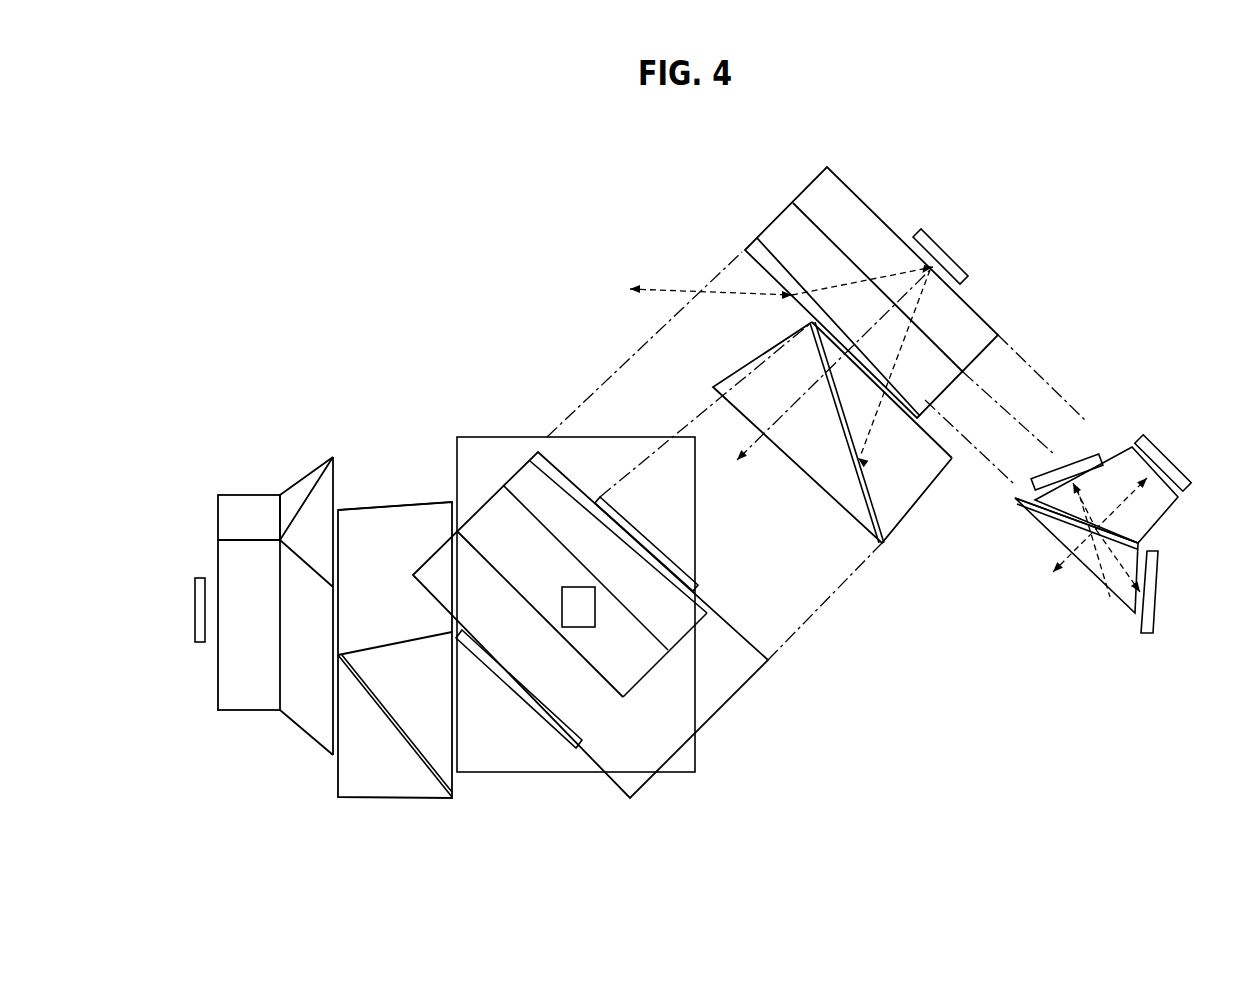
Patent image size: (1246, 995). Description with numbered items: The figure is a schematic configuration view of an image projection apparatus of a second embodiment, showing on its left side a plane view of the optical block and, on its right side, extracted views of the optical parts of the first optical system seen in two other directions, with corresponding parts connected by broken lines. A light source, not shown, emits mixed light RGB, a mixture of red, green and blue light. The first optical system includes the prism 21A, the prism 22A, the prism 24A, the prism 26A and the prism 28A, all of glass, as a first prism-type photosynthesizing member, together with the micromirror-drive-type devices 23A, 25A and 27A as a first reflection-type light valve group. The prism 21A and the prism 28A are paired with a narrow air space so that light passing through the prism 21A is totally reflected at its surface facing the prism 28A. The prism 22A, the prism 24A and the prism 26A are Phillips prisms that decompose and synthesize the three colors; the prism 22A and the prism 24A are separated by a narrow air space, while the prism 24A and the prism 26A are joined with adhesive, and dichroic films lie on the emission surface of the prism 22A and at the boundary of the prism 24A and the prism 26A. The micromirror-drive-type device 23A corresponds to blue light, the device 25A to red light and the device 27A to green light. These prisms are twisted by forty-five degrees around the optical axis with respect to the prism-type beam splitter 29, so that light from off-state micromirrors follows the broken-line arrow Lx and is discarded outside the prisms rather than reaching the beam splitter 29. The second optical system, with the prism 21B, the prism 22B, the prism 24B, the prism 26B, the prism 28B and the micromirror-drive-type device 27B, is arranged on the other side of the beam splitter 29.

The prism 21A is at (880, 548).
The prism 22A is at (760, 237).
The micromirror-drive-type device 23A is at (1157, 600).
The prism 24A is at (793, 203).
The micromirror-drive-type device 25A is at (1090, 456).
The prism 26A is at (990, 320).
The micromirror-drive-type device 27A is at (948, 255).
The prism 28A is at (730, 372).
The prism-type beam splitter 29 is at (480, 437).
The prism 21B is at (398, 800).
The prism 22B is at (305, 732).
The prism 24B is at (296, 480).
The prism 26B is at (248, 712).
The micromirror-drive-type device 27B is at (198, 645).
The prism 28B is at (397, 503).
The broken-line arrow Lx is at (680, 292).
The mixed light RGB is at (930, 507).